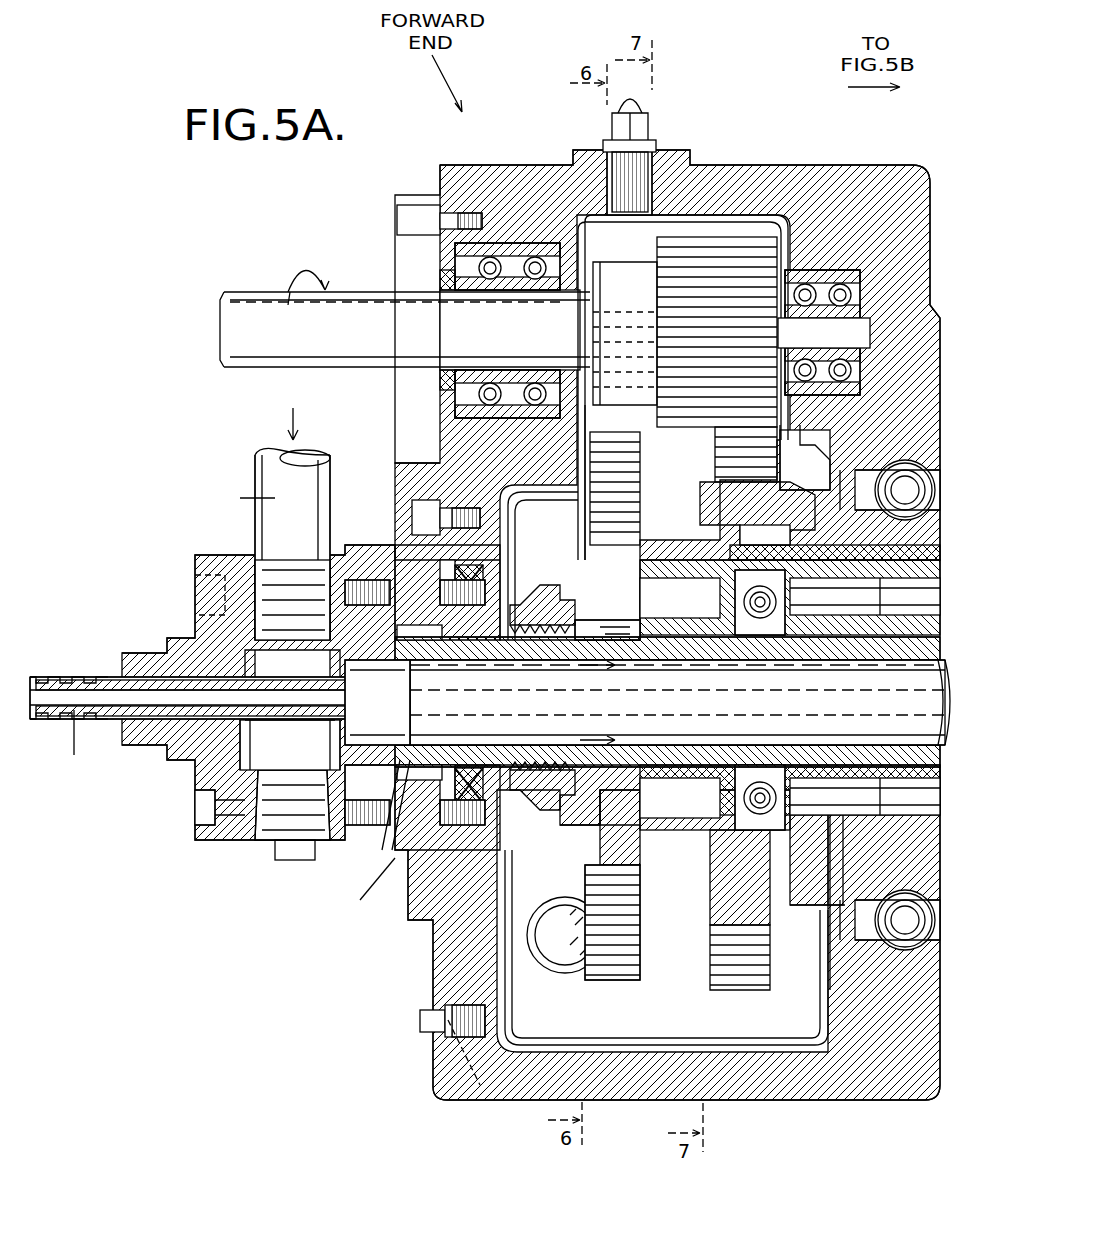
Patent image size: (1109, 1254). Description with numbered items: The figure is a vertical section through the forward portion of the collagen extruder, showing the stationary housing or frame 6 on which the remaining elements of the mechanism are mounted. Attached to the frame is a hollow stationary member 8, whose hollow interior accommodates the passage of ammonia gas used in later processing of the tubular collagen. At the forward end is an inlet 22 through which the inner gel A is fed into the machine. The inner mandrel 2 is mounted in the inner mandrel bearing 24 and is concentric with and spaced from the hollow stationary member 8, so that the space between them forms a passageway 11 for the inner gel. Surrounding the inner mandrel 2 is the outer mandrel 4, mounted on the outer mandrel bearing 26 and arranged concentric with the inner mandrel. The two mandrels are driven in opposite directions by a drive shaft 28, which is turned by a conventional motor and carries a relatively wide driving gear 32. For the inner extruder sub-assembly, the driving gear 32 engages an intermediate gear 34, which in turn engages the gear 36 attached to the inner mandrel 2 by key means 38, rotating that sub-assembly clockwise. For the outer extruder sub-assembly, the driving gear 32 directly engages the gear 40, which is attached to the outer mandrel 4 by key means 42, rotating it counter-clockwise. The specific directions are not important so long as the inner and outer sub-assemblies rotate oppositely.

The inner mandrel 2 is at (466, 645).
The outer mandrel 4 is at (798, 565).
The stationary housing or frame 6 is at (755, 148).
The hollow stationary member 8 is at (552, 716).
The passageway 11 is at (842, 667).
The inlet 22 is at (278, 462).
The inner mandrel bearing 24 is at (760, 625).
The outer mandrel bearing 26 is at (905, 465).
The drive shaft 28 is at (235, 326).
The driving gear 32 is at (776, 243).
The intermediate gear 34 is at (595, 420).
The gear 36 is at (597, 527).
The key means 38 is at (630, 635).
The gear 40 is at (770, 449).
The key means 42 is at (752, 548).